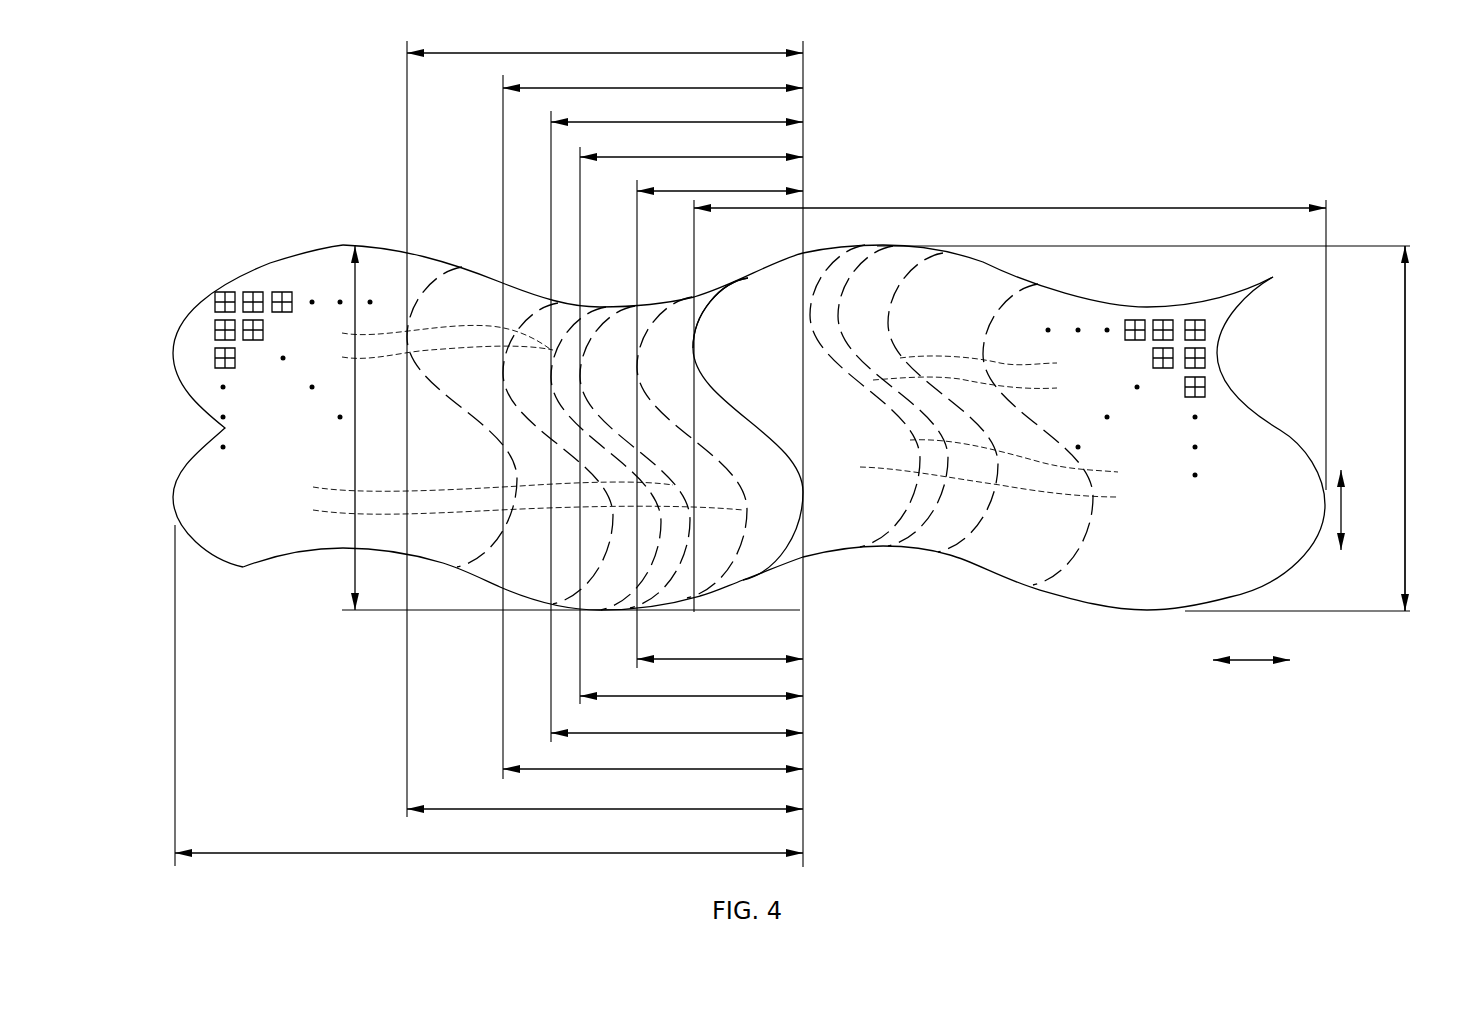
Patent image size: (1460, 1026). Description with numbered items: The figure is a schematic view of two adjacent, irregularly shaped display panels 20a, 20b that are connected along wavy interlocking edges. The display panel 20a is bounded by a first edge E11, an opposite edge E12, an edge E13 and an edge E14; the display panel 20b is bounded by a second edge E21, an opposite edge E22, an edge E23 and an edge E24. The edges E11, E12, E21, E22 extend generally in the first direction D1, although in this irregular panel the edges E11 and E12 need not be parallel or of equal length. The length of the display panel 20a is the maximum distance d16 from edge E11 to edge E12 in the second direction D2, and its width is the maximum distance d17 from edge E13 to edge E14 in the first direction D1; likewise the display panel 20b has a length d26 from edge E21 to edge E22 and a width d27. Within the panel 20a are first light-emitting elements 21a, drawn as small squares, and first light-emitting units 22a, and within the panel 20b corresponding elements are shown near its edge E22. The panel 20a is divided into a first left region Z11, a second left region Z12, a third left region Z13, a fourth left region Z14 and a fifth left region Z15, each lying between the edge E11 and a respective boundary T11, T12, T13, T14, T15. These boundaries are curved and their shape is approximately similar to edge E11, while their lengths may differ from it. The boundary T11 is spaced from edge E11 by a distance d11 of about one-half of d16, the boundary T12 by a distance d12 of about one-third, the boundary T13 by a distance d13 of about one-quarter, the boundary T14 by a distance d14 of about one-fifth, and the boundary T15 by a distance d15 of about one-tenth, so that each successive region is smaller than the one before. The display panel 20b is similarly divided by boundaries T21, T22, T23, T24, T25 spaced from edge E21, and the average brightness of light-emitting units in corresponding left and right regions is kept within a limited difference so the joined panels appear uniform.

The display panel 20a is at (711, 392).
The display panel 20b is at (1062, 414).
The first light-emitting elements 21a is at (215, 293).
The first light-emitting units 22a is at (212, 312).
The first edge E11 is at (787, 537).
The edge E12 is at (190, 450).
The edge E13 is at (294, 255).
The edge E14 is at (305, 553).
The second edge E21 is at (710, 320).
The edge E22 is at (1278, 427).
The edge E23 is at (1210, 300).
The edge E24 is at (1147, 613).
The first boundary T11 is at (435, 282).
The second boundary T12 is at (421, 335).
The third boundary T13 is at (422, 358).
The boundary T14 is at (470, 491).
The boundary T15 is at (505, 514).
The first boundary T21 is at (1036, 308).
The boundary T22 is at (1002, 362).
The boundary T23 is at (989, 387).
The boundary T24 is at (1038, 463).
The boundary T25 is at (1013, 489).
The first left region Z11 is at (605, 37).
The second left region Z12 is at (653, 72).
The third left region Z13 is at (677, 107).
The fourth left region Z14 is at (691, 142).
The fifth left region Z15 is at (720, 175).
The distance d11 is at (605, 795).
The distance d12 is at (653, 755).
The distance d13 is at (677, 719).
The distance d14 is at (691, 682).
The distance d15 is at (720, 644).
The distance d16 is at (489, 838).
The distance d17 is at (312, 217).
The distance d26 is at (1010, 192).
The distance d27 is at (1430, 428).
The first direction D1 is at (1361, 510).
The second direction D2 is at (1251, 679).